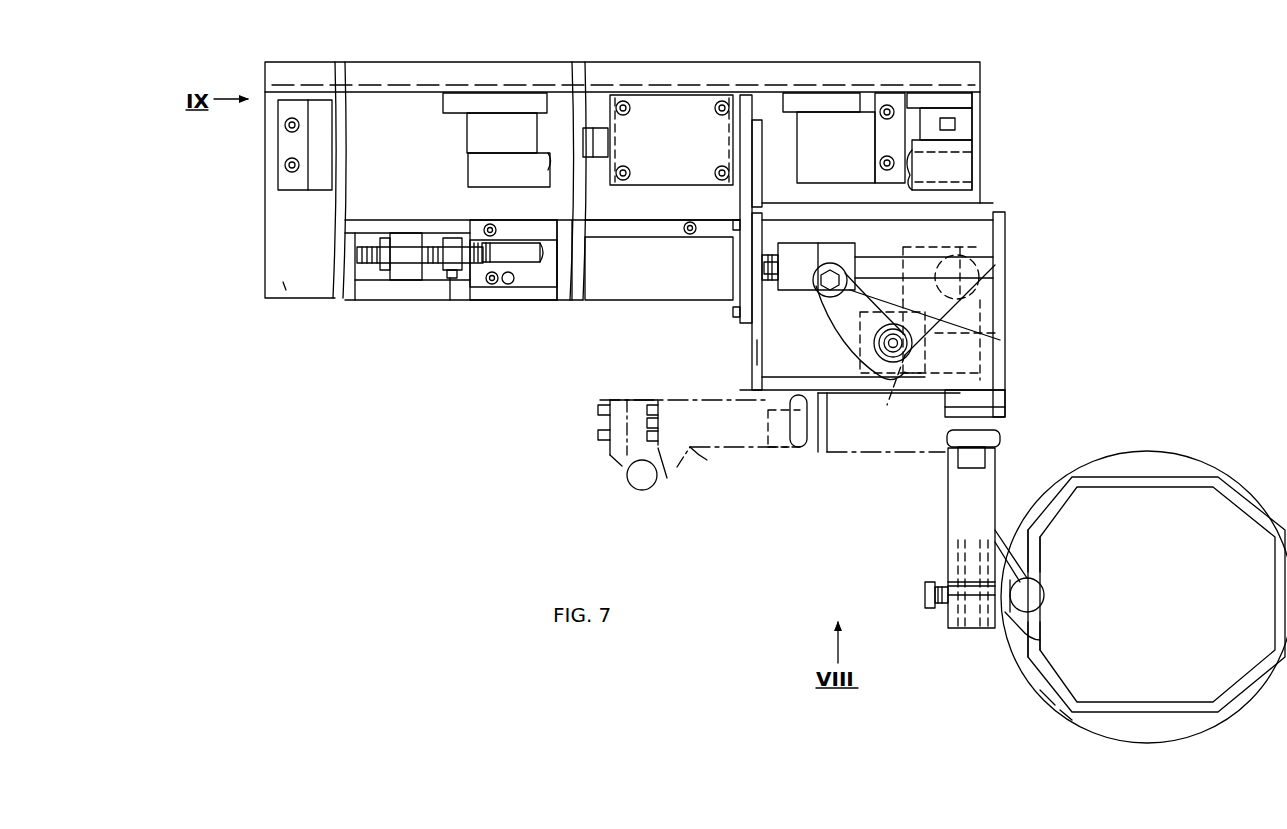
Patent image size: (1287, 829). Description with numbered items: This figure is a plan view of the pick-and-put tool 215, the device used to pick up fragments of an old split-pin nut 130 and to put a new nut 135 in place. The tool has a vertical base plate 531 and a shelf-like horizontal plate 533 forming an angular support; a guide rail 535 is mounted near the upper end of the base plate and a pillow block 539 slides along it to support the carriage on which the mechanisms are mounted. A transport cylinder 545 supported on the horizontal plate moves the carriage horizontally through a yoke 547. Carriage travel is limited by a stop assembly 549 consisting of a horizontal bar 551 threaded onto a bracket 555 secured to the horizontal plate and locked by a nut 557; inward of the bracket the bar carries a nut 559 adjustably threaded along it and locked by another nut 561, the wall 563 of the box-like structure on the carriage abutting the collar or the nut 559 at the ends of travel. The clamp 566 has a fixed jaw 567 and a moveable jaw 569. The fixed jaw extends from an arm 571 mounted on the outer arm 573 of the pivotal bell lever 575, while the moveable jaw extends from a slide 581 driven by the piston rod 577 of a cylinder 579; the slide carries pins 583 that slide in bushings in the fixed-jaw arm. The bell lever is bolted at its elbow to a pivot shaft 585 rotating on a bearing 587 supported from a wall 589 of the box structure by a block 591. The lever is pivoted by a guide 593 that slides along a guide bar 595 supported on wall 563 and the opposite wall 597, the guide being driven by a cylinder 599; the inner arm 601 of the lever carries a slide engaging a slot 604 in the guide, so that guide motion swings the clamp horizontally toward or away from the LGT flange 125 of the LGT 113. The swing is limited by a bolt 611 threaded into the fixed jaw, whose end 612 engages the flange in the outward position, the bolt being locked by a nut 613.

The vertical base plate 531 is at (378, 72).
The horizontal plate 533 is at (312, 290).
The guide rail 535 is at (498, 176).
The pillow block 539 is at (965, 165).
The transport cylinder 545 is at (593, 113).
The yoke 547 is at (643, 110).
The stop assembly 549 is at (430, 265).
The horizontal bar 551 is at (526, 262).
The bracket 555 is at (405, 244).
The nut 557 is at (383, 240).
The nut 559 is at (455, 272).
The nut 561 is at (449, 282).
The wall 563 is at (757, 352).
The clamp 566 is at (605, 458).
The fixed jaw 567 is at (613, 458).
The moveable jaw 569 is at (690, 450).
The arm 571 is at (945, 465).
The outer arm 573 is at (1000, 403).
The bell lever 575 is at (875, 331).
The piston rod 577 is at (1000, 448).
The cylinder 579 is at (995, 353).
The slide 581 is at (1000, 481).
The pins 583 is at (960, 630).
The pivot shaft 585 is at (886, 360).
The bearing 587 is at (903, 365).
The wall 589 is at (773, 397).
The block 591 is at (993, 327).
The guide 593 is at (770, 272).
The guide bar 595 is at (877, 270).
The wall 597 is at (1007, 243).
The cylinder 599 is at (655, 297).
The inner arm 601 is at (840, 307).
The slot 604 is at (837, 247).
The bolt 611 is at (930, 582).
The end of the bolt 612 is at (1000, 575).
The nut 613 is at (940, 606).
The nut 130 is at (633, 484).
The new nut 135 is at (1030, 590).
The LGT flange 125 is at (1020, 670).
The LGT 113 is at (1080, 715).
The pick-and-put tool 215 is at (804, 545).